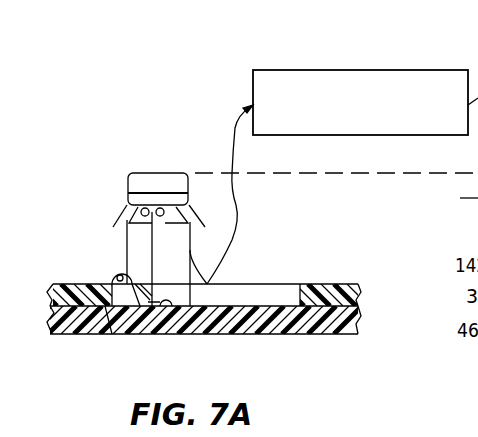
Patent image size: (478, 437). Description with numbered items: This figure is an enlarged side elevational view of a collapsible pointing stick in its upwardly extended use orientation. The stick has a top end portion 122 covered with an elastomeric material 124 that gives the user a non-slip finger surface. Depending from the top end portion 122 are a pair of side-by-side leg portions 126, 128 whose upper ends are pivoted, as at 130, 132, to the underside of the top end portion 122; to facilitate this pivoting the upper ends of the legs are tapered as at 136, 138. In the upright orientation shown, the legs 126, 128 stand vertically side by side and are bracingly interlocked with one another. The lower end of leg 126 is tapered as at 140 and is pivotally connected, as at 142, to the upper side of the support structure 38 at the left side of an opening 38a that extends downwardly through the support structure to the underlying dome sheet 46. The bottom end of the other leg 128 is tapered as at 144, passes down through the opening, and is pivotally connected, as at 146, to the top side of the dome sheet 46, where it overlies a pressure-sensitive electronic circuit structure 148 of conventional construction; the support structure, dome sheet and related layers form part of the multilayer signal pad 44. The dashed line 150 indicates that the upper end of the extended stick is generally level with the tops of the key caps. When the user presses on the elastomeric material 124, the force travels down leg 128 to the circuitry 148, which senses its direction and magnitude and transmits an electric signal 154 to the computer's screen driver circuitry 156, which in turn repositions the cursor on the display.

The support structure 38 is at (69, 284).
The opening 38a is at (278, 298).
The multilayer signal pad 44 is at (338, 336).
The dome sheet 46 is at (70, 335).
The top end portion 122 is at (128, 200).
The elastomeric material 124 is at (153, 173).
The leg portion 126 is at (147, 245).
The leg portion 128 is at (182, 274).
The pivot 130 is at (128, 228).
The pivot 132 is at (182, 223).
The tapered upper end 136 is at (129, 215).
The tapered upper end 138 is at (190, 220).
The tapered lower end 140 is at (127, 242).
The pivotal connection 142 is at (110, 334).
The tapered bottom end 144 is at (126, 335).
The pivotal connection 146 is at (187, 335).
The pressure-sensitive electronic circuit structure 148 is at (240, 335).
The dashed line 150 is at (335, 173).
The electric signal 154 is at (235, 128).
The screen driver circuitry 156 is at (353, 70).